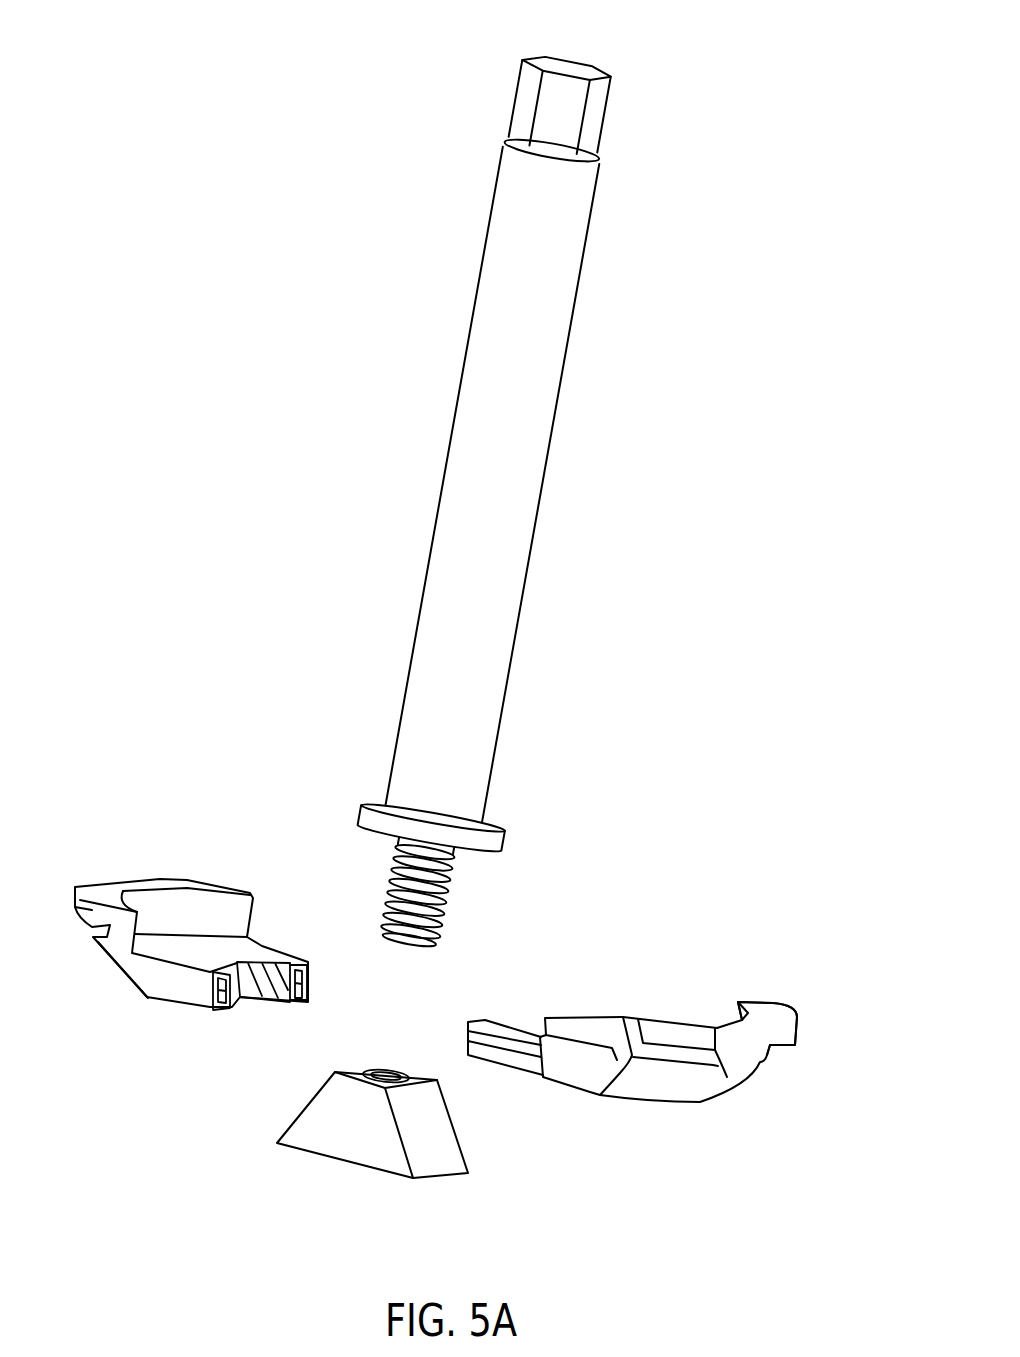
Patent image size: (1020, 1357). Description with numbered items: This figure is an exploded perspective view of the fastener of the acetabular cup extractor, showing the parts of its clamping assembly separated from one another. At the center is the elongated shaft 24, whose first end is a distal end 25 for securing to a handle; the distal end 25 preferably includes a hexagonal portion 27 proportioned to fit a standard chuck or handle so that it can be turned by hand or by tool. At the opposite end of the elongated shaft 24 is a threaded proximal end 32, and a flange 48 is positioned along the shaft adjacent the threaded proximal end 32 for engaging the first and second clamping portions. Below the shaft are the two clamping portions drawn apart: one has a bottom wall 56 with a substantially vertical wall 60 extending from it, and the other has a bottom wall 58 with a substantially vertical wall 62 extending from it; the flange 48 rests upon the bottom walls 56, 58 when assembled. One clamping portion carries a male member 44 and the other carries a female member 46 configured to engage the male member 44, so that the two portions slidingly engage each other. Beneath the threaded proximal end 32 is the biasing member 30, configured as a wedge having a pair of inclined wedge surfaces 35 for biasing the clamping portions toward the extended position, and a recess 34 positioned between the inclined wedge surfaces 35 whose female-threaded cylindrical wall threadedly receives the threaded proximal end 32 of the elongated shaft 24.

The distal end 25 is at (612, 58).
The hexagonal portion 27 is at (603, 127).
The elongated shaft 24 is at (556, 415).
The flange 48 is at (363, 798).
The threaded proximal end 32 is at (453, 873).
The substantially vertical wall 60 is at (152, 918).
The bottom wall 56 is at (200, 948).
The female member 46 is at (306, 960).
The bottom wall 58 is at (598, 1023).
The substantially vertical wall 62 is at (740, 1003).
The male member 44 is at (497, 1025).
The biasing member 30 is at (432, 1203).
The inclined wedge surfaces 35 is at (433, 1130).
The recess 34 is at (383, 1068).